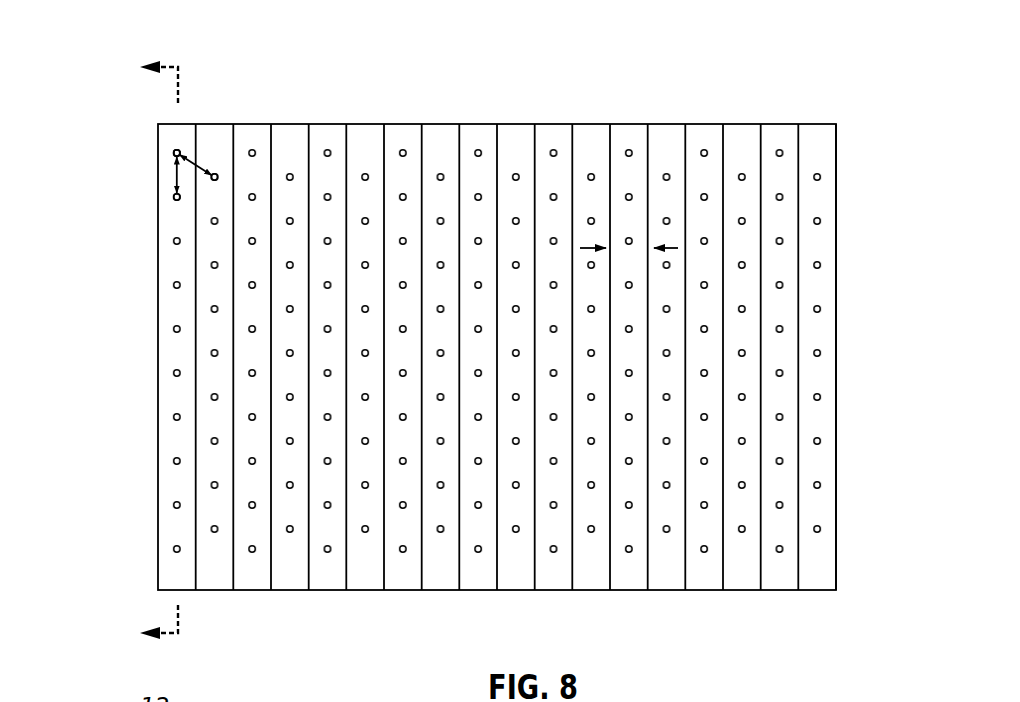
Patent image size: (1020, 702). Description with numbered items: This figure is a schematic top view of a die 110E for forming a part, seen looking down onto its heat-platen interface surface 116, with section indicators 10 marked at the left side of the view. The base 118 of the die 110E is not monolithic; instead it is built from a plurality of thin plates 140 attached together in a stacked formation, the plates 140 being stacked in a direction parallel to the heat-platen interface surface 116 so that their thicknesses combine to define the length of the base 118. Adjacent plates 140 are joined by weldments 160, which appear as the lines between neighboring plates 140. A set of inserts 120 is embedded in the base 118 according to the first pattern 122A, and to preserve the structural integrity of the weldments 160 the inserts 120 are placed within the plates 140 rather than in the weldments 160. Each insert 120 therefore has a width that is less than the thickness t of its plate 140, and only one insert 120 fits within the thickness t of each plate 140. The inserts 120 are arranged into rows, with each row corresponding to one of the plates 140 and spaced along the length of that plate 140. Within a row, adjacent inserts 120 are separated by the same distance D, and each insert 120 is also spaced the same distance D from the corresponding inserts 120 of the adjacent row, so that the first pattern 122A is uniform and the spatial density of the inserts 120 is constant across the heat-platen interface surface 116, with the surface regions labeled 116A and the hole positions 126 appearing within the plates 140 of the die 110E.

The section line 10 is at (159, 349).
The die 110E is at (840, 149).
The heat-platen interface surface 116 is at (828, 208).
The wall surface 116A is at (175, 313).
The base 118 is at (836, 463).
The insert 120 is at (179, 150).
The first pattern 122A is at (172, 151).
The hole 126 is at (174, 564).
The plate 140 is at (372, 132).
The weldment 160 is at (422, 563).
The distance D is at (197, 163).
The thickness t is at (678, 248).